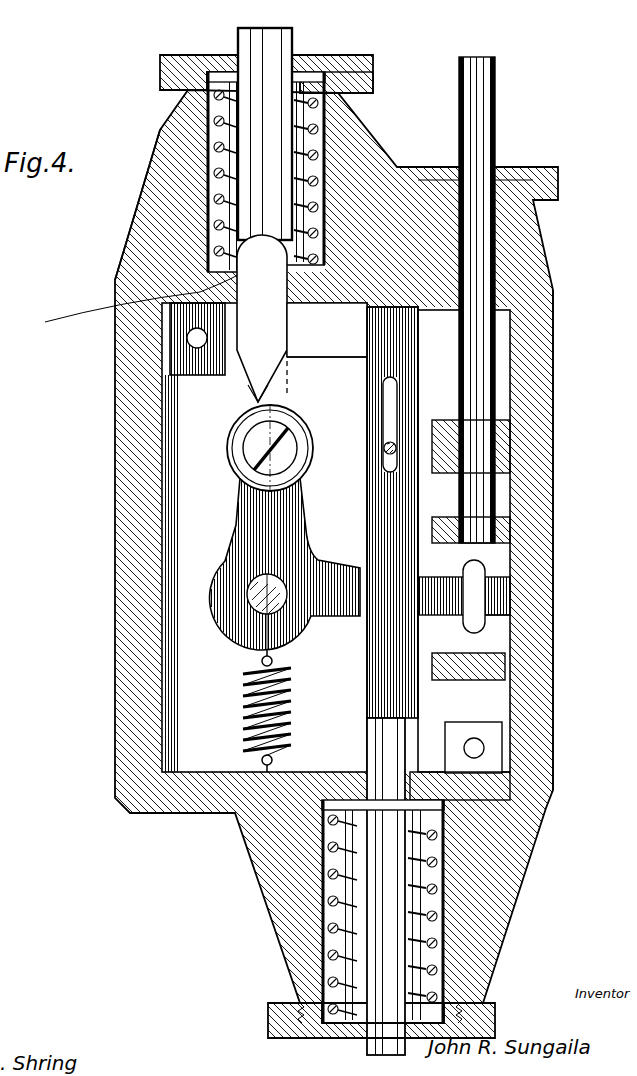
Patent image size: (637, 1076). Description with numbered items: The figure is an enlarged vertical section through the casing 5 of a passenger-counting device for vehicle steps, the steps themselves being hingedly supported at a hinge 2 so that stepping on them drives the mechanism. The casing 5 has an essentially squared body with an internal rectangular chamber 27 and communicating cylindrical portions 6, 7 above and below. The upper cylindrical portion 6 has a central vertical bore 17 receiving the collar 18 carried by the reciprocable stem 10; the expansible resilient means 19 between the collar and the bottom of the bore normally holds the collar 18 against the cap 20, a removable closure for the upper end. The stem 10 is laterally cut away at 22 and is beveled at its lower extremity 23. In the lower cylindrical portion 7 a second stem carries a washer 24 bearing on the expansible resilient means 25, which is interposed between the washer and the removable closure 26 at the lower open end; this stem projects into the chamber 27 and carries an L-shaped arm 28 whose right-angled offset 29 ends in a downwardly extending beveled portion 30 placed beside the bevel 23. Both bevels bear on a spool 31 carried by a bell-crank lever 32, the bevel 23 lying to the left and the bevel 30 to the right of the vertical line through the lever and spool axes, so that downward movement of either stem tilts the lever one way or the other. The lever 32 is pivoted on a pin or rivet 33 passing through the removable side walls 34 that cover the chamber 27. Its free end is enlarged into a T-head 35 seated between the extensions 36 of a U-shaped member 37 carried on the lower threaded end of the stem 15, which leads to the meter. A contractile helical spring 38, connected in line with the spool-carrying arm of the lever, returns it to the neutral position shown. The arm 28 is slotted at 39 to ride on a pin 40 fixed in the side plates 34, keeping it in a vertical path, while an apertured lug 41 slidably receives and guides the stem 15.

The hinged support 2 is at (127, 301).
The casing 5 is at (556, 490).
The upper cylindrical portion 6 is at (123, 223).
The cylindrical portion 7 is at (512, 897).
The reciprocable stem 10 is at (293, 42).
The stem 15 is at (496, 103).
The central vertical bore 17 is at (322, 140).
The collar 18 is at (222, 72).
The expansible resilient means 19 is at (207, 180).
The cap 20 is at (372, 72).
The lateral cut-away 22 is at (262, 318).
The beveled lower extremity 23 is at (255, 401).
The washer 24 is at (445, 800).
The expansible resilient means 25 is at (447, 866).
The removable closure 26 is at (495, 1012).
The internal rectangular chamber 27 is at (500, 700).
The L-shaped arm 28 is at (375, 652).
The right-angled offset 29 is at (356, 345).
The beveled portion 30 is at (300, 372).
The spool 31 is at (228, 463).
The bell-crank lever 32 is at (247, 531).
The pin or rivet 33 is at (250, 606).
The removable side walls 34 is at (196, 537).
The T-head 35 is at (482, 592).
The extensions 36 is at (510, 528).
The U-shaped member 37 is at (500, 613).
The contractile helical spring 38 is at (243, 707).
The slot 39 is at (396, 405).
The pin 40 is at (394, 442).
The lug 41 is at (500, 428).